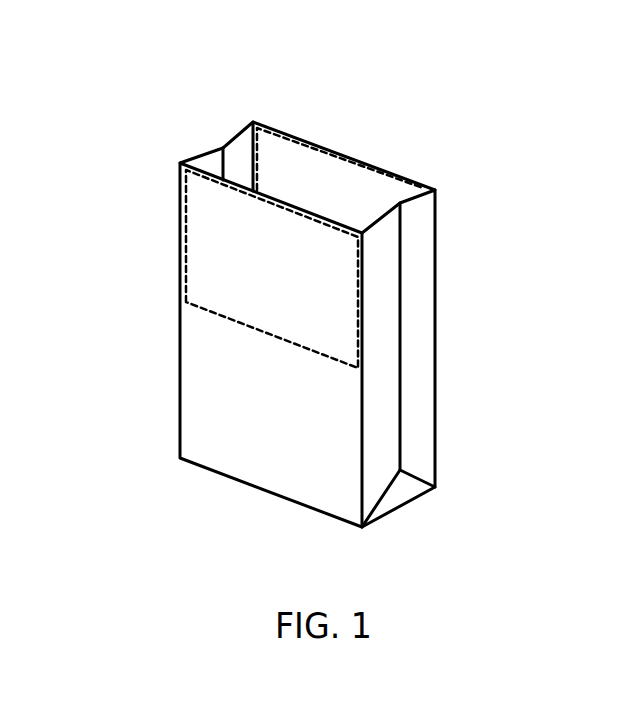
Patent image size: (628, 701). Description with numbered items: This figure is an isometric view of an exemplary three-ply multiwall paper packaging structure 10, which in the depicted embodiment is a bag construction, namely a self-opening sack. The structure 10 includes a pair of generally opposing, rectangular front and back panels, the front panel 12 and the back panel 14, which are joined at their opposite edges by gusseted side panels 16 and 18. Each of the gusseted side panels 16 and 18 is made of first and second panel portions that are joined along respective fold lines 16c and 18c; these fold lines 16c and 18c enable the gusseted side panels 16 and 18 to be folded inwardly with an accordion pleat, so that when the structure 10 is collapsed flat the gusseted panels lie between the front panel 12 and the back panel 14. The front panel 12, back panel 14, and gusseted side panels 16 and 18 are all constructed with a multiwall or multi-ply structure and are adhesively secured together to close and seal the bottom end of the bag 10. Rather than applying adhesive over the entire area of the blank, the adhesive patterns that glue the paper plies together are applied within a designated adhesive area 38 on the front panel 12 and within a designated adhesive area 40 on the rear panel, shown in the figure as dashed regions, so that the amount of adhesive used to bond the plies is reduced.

The multiwall packaging structure 10 is at (452, 370).
The front panel 12 is at (235, 443).
The back panel 14 is at (395, 167).
The gusseted side panel 16 is at (208, 152).
The fold line 16c is at (258, 120).
The gusseted side panel 18 is at (418, 257).
The fold line 18c is at (400, 410).
The adhesive area 38 is at (257, 262).
The adhesive area 40 is at (308, 163).